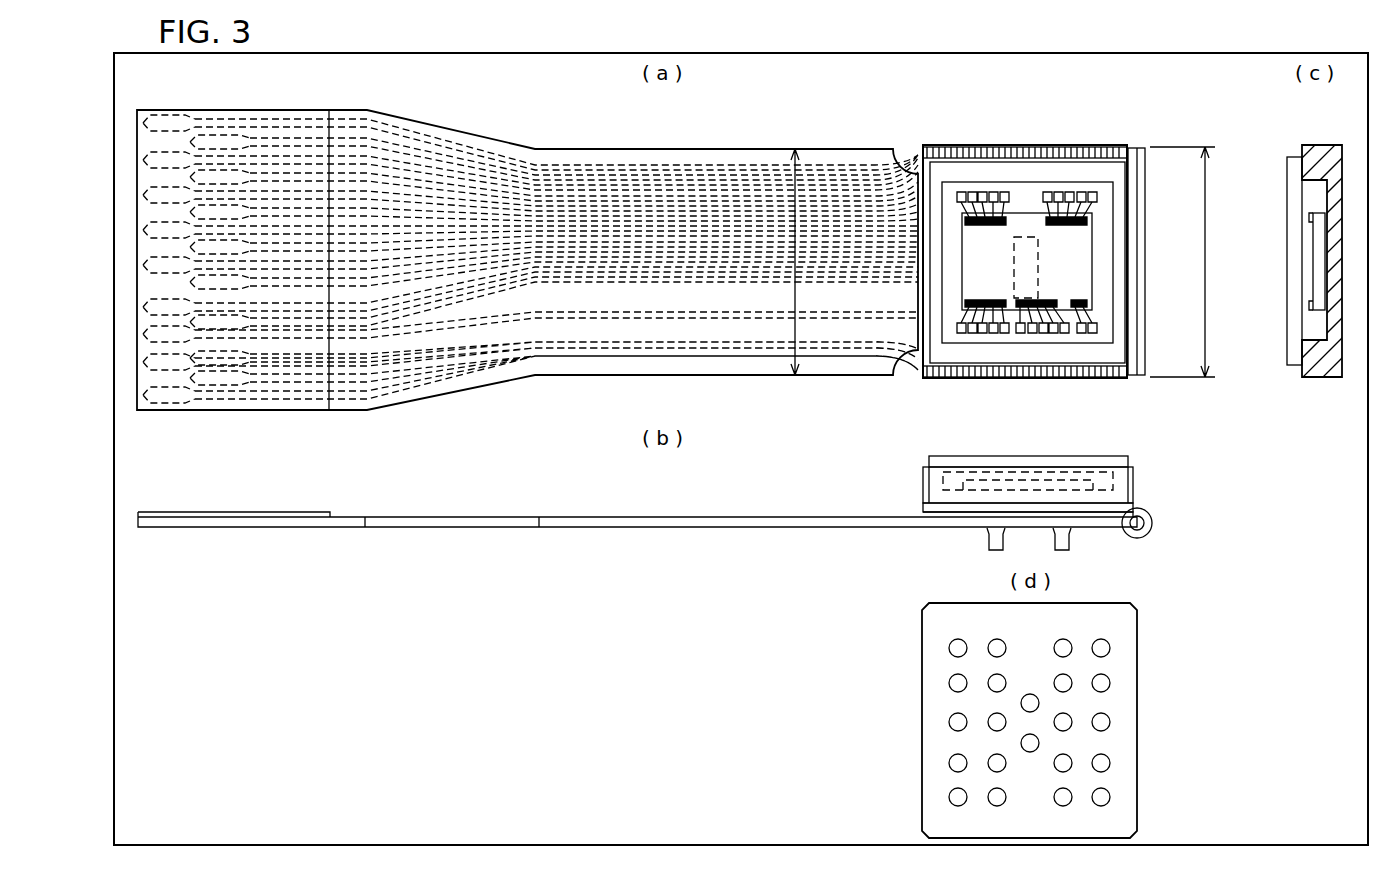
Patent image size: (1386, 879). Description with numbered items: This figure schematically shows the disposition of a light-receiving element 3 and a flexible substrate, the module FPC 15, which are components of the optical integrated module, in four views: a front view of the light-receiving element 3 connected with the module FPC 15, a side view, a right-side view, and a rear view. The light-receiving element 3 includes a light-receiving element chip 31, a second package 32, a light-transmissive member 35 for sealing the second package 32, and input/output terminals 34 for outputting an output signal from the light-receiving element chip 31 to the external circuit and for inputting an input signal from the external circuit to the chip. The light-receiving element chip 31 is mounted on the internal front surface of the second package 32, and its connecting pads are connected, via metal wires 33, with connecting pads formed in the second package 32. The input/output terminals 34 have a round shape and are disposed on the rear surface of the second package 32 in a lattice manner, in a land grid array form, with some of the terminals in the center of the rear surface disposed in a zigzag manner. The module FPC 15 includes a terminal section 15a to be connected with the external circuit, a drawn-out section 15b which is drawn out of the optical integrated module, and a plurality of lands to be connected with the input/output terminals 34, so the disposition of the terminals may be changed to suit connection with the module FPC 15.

The light-receiving element 3 is at (1084, 137).
The module FPC 15 is at (574, 140).
The terminal section 15a is at (222, 135).
The drawn-out section 15b is at (745, 155).
The light-receiving element chip 31 is at (1093, 248).
The second package 32 is at (1335, 378).
The metal wires 33 is at (1093, 212).
The input/output terminals 34 is at (1110, 648).
The light-transmissive member 35 is at (1290, 367).